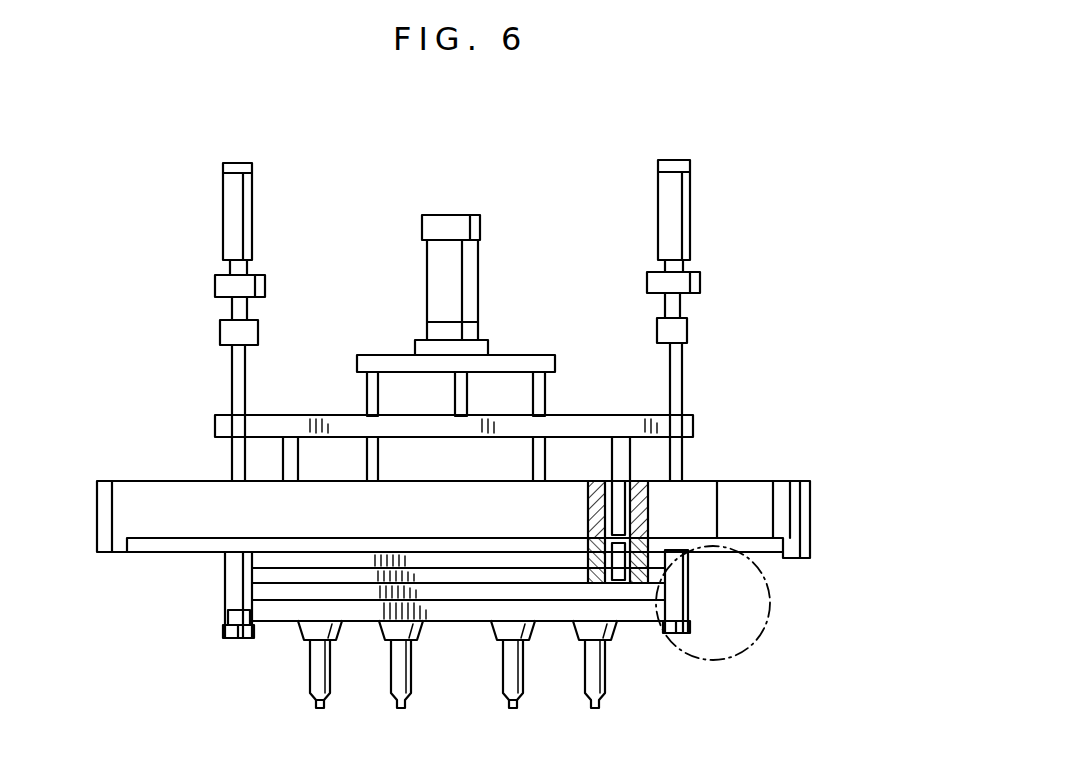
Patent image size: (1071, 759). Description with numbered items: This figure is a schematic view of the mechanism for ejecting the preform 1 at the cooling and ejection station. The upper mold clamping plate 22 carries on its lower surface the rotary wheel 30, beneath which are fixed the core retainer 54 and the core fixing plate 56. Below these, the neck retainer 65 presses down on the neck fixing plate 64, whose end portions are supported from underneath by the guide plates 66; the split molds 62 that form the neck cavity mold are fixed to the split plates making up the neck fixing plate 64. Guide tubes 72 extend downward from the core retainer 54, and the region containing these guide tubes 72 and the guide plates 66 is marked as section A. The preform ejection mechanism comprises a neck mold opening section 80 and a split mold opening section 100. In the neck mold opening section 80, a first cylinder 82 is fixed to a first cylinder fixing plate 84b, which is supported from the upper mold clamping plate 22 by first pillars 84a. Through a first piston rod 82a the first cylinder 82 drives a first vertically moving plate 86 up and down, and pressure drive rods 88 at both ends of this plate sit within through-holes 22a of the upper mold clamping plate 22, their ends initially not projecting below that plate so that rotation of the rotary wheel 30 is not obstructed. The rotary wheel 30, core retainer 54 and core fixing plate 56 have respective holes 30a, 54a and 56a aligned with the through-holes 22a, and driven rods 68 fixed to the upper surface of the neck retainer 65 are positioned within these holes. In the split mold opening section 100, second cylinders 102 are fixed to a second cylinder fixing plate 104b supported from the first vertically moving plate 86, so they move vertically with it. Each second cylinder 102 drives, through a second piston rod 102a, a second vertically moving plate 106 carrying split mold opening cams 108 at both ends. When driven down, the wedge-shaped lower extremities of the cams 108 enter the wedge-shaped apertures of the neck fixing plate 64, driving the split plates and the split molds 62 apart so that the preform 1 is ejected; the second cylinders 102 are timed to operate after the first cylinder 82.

The preform 1 is at (328, 686).
The upper mold clamping plate 22 is at (796, 527).
The through-holes 22a is at (650, 500).
The rotary wheel 30 is at (740, 545).
The holes 30a is at (652, 522).
The core retainer 54 is at (238, 558).
The holes 54a is at (598, 556).
The core fixing plate 56 is at (260, 592).
The holes 56a is at (588, 578).
The split molds 62 is at (421, 630).
The neck fixing plate 64 is at (275, 612).
The neck retainer 65 is at (235, 612).
The guide plates 66 is at (238, 630).
The driven rods 68 is at (624, 586).
The guide tubes 72 is at (233, 585).
The neck mold opening section 80 is at (392, 210).
The first cylinder 82 is at (458, 268).
The first piston rod 82a is at (462, 400).
The first pillars 84a is at (368, 392).
The first cylinder fixing plate 84b is at (517, 356).
The first vertically moving plate 86 is at (692, 427).
The pressure drive rods 88 is at (290, 457).
The split mold opening section 100 is at (848, 137).
The second cylinders 102 is at (228, 222).
The second piston rods 102a is at (686, 303).
The second cylinder fixing plate 104b is at (700, 284).
The second vertically moving plates 106 is at (689, 333).
The split mold opening cams 108 is at (684, 378).
The section A is at (767, 634).